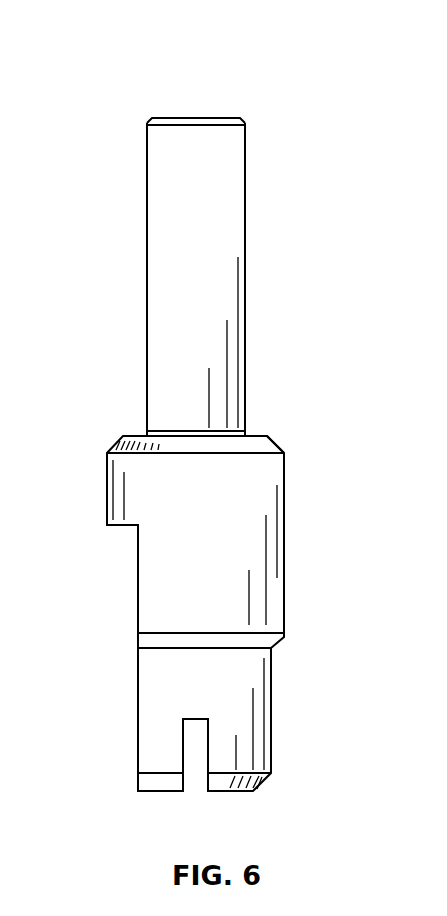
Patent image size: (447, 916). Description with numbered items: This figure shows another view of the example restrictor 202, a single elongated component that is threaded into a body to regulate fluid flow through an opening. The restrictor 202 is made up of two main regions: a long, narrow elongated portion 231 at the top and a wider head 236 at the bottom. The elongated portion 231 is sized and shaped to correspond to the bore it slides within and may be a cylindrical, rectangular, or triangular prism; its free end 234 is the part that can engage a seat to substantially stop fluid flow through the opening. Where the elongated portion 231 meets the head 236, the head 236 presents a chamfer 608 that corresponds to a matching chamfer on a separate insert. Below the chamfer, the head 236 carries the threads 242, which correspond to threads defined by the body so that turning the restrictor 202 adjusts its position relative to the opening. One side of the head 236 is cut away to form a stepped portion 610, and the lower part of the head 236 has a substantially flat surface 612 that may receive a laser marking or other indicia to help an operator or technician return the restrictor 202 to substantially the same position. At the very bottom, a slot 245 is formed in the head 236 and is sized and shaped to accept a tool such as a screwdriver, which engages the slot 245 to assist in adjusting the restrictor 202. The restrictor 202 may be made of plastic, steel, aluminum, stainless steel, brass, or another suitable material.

The restrictor 202 is at (93, 58).
The elongated portion 231 is at (160, 236).
The end 234 is at (215, 117).
The chamfer 608 is at (275, 447).
The threads 242 is at (274, 474).
The head 236 is at (273, 586).
The stepped portion 610 is at (123, 528).
The flat surface 612 is at (137, 700).
The slot 245 is at (208, 774).